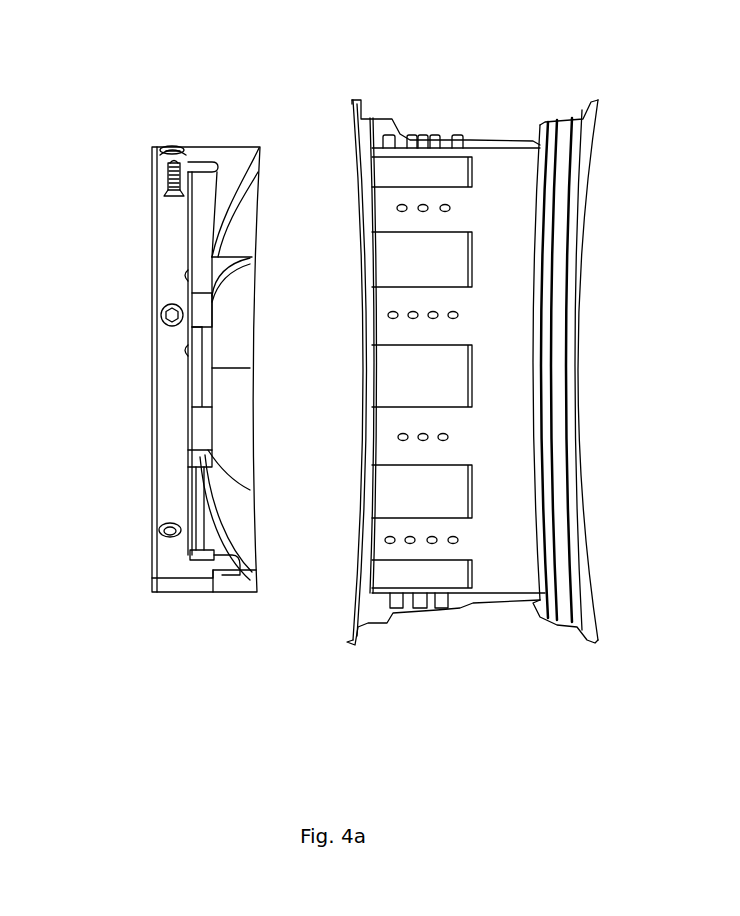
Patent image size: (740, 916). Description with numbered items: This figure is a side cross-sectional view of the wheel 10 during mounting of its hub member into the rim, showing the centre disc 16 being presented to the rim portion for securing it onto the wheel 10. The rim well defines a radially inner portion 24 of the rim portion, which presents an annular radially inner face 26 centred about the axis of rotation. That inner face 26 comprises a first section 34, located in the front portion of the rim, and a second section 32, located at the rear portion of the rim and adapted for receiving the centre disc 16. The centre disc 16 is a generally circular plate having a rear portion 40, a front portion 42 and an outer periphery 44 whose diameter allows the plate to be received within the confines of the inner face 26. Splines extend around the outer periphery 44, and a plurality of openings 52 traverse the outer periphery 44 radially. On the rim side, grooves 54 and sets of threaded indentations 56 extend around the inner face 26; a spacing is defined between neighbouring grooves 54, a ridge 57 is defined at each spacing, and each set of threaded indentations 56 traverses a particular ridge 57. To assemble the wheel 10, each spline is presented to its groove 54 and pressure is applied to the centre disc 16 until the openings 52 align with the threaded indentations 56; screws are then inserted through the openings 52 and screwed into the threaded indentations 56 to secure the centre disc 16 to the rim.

The wheel 10 is at (535, 110).
The centre disc 16 is at (160, 130).
The radially inner portion 24 is at (478, 118).
The radially inner face 26 is at (493, 590).
The second section 32 is at (403, 627).
The first section 34 is at (508, 617).
The rear portion 40 is at (113, 377).
The front portion 42 is at (268, 275).
The outer periphery 44 is at (193, 597).
The openings 52 is at (172, 147).
The grooves 54 is at (378, 167).
The threaded indentations 56 is at (393, 122).
The ridge 57 is at (378, 212).